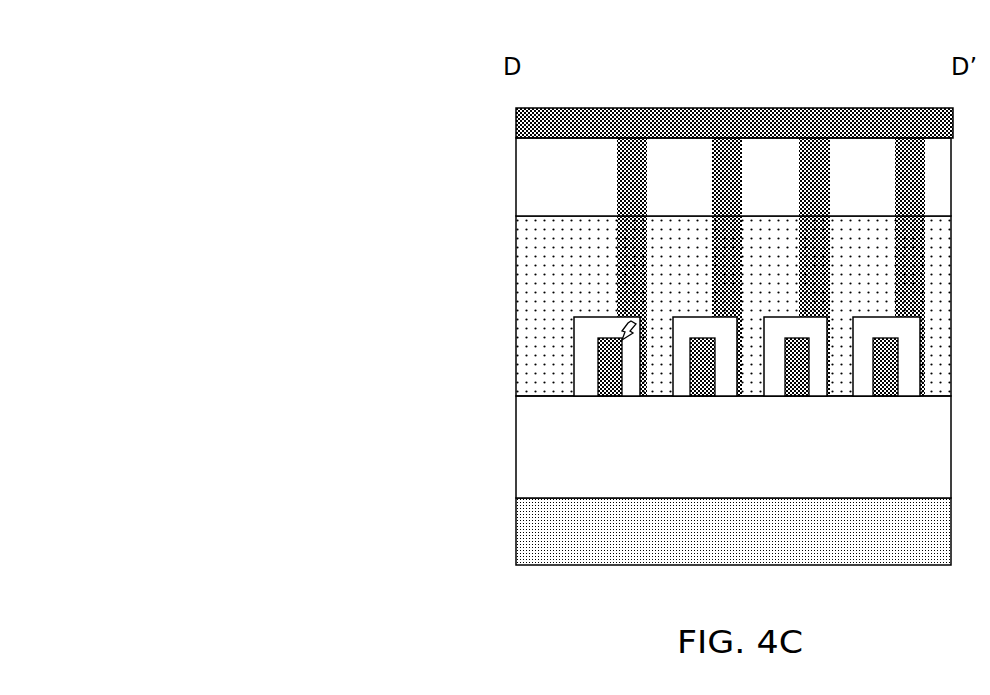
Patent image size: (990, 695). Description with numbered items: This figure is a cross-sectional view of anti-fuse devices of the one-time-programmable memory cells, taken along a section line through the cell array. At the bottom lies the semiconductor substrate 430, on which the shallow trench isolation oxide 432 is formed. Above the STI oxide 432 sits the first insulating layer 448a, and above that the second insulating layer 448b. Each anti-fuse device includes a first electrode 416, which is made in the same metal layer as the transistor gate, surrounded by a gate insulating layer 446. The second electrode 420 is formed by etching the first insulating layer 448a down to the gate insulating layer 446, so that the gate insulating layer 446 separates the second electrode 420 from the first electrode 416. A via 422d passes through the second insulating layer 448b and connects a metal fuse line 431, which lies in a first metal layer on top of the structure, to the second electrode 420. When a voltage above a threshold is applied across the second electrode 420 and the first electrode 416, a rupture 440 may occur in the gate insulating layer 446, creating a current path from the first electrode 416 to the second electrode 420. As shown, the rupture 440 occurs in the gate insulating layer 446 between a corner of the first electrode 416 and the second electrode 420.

The metal fuse line 431 is at (520, 113).
The via 422d is at (630, 173).
The second insulating layer 448b is at (543, 193).
The first insulating layer 448a is at (547, 248).
The second electrode 420 is at (625, 295).
The rupture 440 is at (598, 333).
The gate insulating layer 446 is at (588, 355).
The first electrode 416 is at (598, 383).
The shallow trench isolation (STI) oxide 432 is at (812, 457).
The semiconductor substrate 430 is at (895, 539).